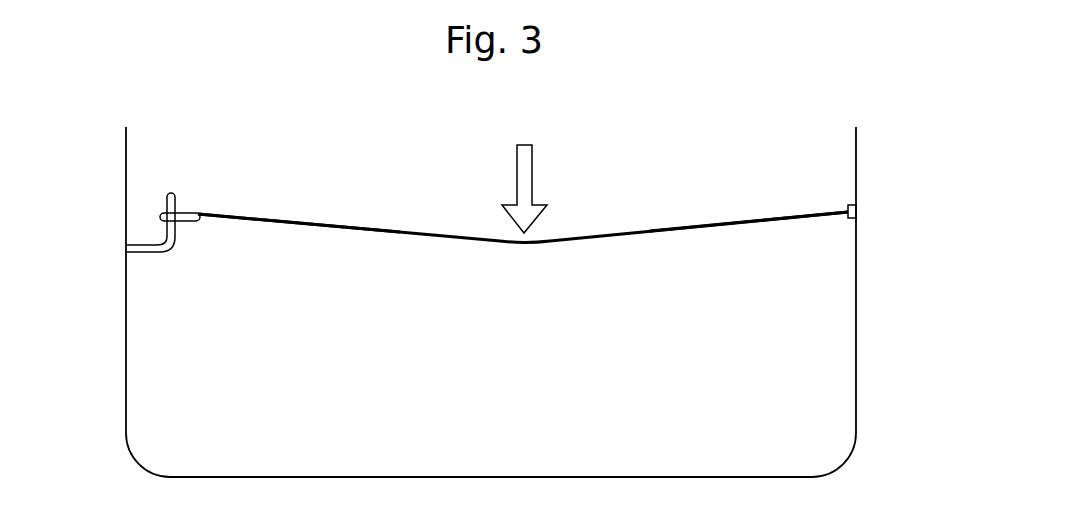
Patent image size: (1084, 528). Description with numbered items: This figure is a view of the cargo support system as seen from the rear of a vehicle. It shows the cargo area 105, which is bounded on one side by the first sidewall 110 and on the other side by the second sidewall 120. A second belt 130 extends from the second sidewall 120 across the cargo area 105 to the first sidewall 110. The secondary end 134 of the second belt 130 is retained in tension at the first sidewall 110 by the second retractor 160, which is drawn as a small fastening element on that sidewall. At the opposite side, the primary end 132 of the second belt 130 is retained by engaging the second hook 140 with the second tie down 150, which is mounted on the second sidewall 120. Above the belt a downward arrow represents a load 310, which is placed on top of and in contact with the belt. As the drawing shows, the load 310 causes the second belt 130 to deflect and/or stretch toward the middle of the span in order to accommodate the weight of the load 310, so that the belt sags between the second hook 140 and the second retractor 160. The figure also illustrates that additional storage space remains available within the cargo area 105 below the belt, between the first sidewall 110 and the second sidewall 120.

The cargo area 105 is at (665, 445).
The first sidewall 110 is at (856, 380).
The second sidewall 120 is at (126, 380).
The second belt 130 is at (672, 229).
The primary end 132 is at (256, 212).
The secondary end 134 is at (804, 216).
The second hook 140 is at (172, 193).
The second tie down 150 is at (161, 253).
The second retractor 160 is at (856, 211).
The load 310 is at (540, 177).